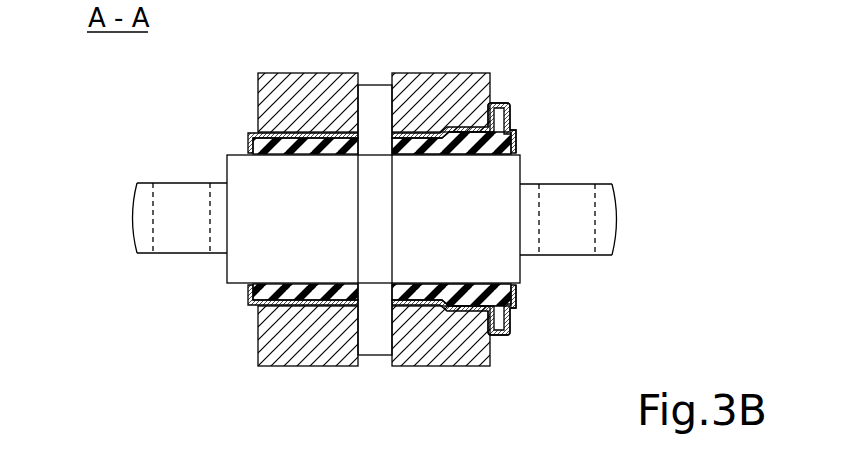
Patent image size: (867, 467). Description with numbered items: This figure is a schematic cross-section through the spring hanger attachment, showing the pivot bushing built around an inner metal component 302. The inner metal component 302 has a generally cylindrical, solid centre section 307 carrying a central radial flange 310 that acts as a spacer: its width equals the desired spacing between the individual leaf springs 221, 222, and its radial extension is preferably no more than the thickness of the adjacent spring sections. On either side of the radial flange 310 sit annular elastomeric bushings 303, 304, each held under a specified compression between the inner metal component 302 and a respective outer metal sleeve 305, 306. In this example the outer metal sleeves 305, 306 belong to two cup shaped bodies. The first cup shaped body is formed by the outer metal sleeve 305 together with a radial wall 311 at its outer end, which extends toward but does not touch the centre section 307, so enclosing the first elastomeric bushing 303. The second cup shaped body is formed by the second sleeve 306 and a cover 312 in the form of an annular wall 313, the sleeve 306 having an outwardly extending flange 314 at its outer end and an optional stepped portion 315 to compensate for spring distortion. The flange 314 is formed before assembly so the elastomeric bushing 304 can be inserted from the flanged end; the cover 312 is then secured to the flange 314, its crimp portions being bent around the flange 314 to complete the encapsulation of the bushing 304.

The leaf spring 221 is at (443, 367).
The leaf spring 222 is at (255, 370).
The inner metal component 302 is at (322, 251).
The elastomeric bushing 303 is at (284, 134).
The elastomeric bushing 304 is at (458, 142).
The outer metal sleeve 305 is at (262, 352).
The outer metal sleeve 306 is at (432, 303).
The centre section 307 is at (467, 227).
The radial flange 310 is at (370, 92).
The radial wall 311 is at (287, 142).
The cover 312 is at (506, 355).
The annular wall 313 is at (516, 135).
The outwardly extending flange 314 is at (507, 103).
The stepped portion 315 is at (486, 362).